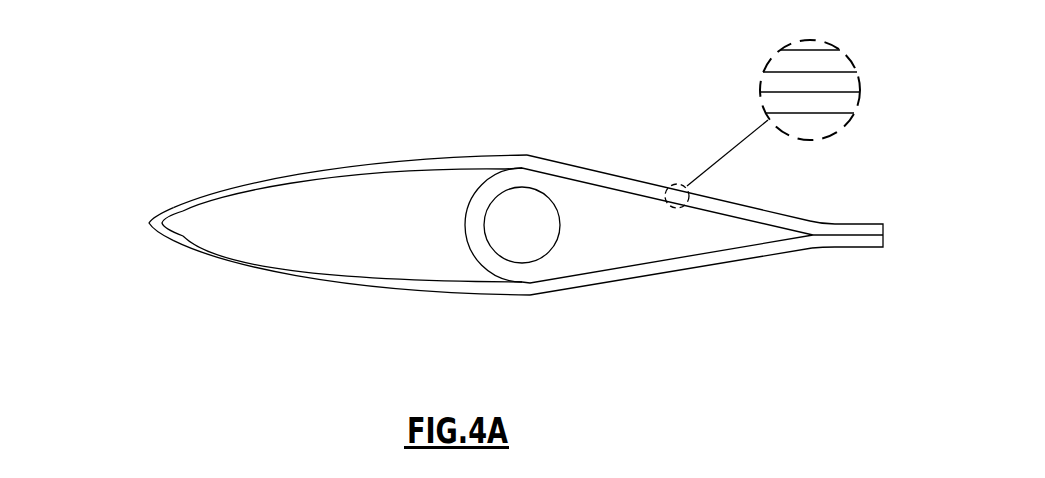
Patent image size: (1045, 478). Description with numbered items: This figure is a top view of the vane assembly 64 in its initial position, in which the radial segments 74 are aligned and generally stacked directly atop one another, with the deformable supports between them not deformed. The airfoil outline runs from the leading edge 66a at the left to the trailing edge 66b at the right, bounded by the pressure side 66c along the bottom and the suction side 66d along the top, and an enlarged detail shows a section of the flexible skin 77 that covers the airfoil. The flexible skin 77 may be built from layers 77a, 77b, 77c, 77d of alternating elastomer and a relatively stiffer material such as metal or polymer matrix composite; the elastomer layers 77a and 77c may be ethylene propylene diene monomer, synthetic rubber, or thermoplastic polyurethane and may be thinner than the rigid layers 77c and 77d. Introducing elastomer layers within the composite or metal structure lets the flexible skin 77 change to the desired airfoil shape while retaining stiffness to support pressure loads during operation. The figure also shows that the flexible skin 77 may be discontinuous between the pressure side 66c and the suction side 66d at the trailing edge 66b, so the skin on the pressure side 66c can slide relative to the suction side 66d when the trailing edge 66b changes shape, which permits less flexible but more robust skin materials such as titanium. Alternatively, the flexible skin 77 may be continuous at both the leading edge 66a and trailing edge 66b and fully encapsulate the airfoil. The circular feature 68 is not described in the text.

The vane assembly 64 is at (507, 171).
The leading edge 66a is at (121, 218).
The trailing edge 66b is at (897, 257).
The pressure side 66c is at (468, 336).
The suction side 66d is at (509, 125).
The cooling passage 68 is at (522, 263).
The radial segments 74 is at (676, 240).
The flexible skin 77 is at (628, 280).
The elastomer layer 77a is at (787, 60).
The layer of flexible skin 77b is at (777, 83).
The elastomer layer 77c is at (767, 101).
The rigid layer 77d is at (817, 123).